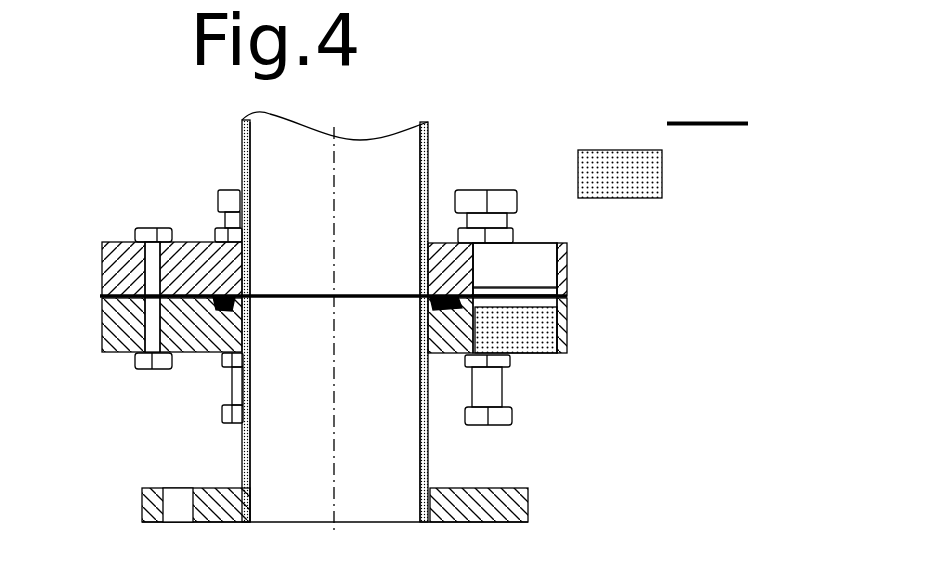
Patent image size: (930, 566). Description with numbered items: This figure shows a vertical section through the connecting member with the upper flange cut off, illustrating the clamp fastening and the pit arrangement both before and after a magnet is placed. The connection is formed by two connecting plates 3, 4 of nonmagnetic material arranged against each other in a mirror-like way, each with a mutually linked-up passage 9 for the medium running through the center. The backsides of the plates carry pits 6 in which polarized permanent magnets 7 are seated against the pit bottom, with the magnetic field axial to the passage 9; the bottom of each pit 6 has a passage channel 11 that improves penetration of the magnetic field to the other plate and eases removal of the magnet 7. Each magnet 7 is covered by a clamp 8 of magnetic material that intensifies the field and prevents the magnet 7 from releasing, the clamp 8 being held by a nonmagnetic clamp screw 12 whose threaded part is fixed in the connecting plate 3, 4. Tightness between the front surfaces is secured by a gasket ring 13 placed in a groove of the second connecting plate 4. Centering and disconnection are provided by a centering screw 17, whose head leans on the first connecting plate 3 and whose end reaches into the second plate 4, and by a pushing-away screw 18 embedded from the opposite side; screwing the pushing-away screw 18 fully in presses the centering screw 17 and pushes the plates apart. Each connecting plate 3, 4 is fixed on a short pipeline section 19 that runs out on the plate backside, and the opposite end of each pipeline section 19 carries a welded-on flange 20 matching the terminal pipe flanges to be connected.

The connecting plate 3 is at (98, 257).
The connecting plate 4 is at (103, 323).
The pit 6 is at (542, 268).
The magnet 7 is at (532, 358).
The clamp 8 is at (121, 241).
The passage 9 is at (397, 147).
The passage channel 11 is at (520, 290).
The clamp screw 12 is at (155, 228).
The gasket ring 13 is at (438, 303).
The centering screw 17 is at (508, 190).
The pushing-away screw 18 is at (497, 387).
The pipeline section 19 is at (432, 143).
The flange 20 is at (518, 503).